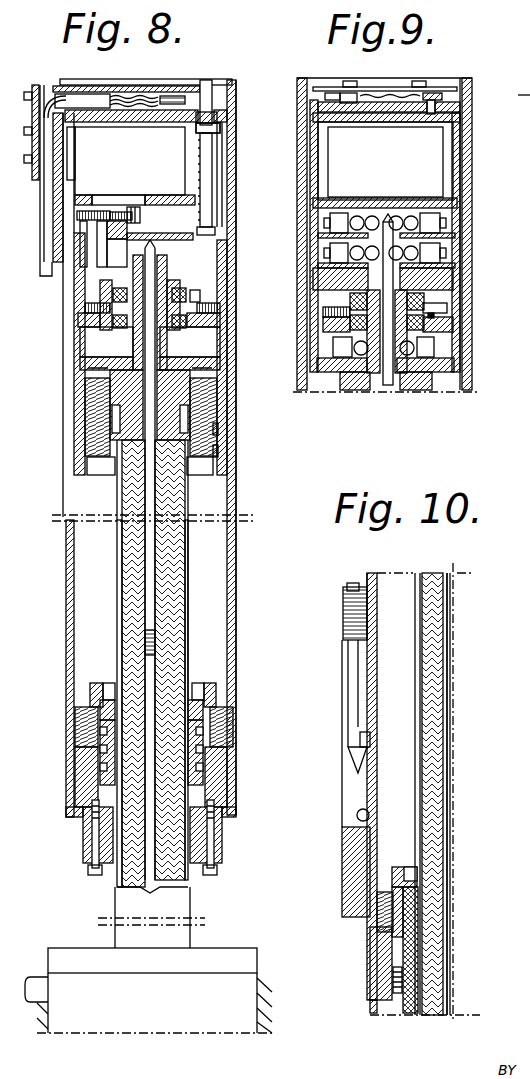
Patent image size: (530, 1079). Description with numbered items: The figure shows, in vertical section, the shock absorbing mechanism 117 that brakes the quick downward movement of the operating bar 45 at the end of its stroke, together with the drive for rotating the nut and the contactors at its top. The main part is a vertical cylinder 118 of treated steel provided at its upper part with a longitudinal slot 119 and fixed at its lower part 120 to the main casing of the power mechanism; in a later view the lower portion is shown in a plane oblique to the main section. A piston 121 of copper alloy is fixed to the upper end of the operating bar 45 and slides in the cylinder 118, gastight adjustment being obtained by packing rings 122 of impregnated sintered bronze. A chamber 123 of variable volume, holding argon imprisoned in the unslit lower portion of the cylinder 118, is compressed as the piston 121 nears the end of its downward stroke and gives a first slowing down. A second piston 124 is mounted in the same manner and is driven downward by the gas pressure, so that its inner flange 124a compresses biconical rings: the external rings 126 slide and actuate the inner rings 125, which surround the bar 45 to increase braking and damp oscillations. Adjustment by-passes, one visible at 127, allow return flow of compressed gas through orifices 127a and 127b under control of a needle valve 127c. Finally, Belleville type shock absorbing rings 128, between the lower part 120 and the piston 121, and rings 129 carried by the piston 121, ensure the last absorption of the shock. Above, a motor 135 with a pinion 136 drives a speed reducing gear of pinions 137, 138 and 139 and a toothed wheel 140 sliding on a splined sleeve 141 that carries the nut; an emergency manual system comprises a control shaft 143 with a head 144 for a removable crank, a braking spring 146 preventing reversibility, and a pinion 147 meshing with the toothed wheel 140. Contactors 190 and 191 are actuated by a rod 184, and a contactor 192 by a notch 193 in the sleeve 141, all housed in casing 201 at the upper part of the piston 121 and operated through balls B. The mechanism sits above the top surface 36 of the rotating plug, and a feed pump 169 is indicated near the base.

In FIG. 8, the top surface 36 is at (262, 976).
In FIG. 8, the operating bar 45 is at (190, 881).
In FIG. 10, the operating bar 45 is at (452, 788).
In FIG. 8, the shock absorbing mechanism 117 is at (241, 581).
In FIG. 8, the vertical cylinder 118 is at (237, 645).
In FIG. 9, the vertical cylinder 118 is at (472, 303).
In FIG. 10, the vertical cylinder 118 is at (367, 578).
In FIG. 8, the longitudinal slot 119 is at (68, 342).
In FIG. 8, the lower part of cylinder 120 is at (236, 753).
In FIG. 10, the lower part of cylinder 120 is at (403, 948).
In FIG. 8, the piston 121 is at (218, 395).
In FIG. 9, the piston 121 is at (456, 280).
In FIG. 8, the packing rings 122 is at (232, 453).
In FIG. 8, the chamber 123 is at (216, 662).
In FIG. 10, the chamber 123 is at (412, 841).
In FIG. 8, the second piston 124 is at (237, 778).
In FIG. 10, the second piston 124 is at (415, 952).
In FIG. 8, the inner flange 124a is at (207, 700).
In FIG. 10, the inner flange 124a is at (392, 887).
In FIG. 8, the inner rings 125 is at (218, 844).
In FIG. 10, the inner rings 125 is at (420, 935).
In FIG. 8, the external rings 126 is at (221, 828).
In FIG. 10, the external rings 126 is at (412, 912).
In FIG. 10, the adjustment by-pass 127 is at (352, 781).
In FIG. 10, the orifice 127a is at (369, 813).
In FIG. 10, the orifice 127b is at (371, 741).
In FIG. 10, the needle valve 127c is at (343, 629).
In FIG. 8, the shock absorbing rings 128 is at (222, 710).
In FIG. 10, the shock absorbing rings 128 is at (385, 915).
In FIG. 8, the shock absorbing rings 129 is at (208, 470).
In FIG. 8, the motor 135 is at (147, 171).
In FIG. 9, the motor 135 is at (400, 171).
In FIG. 8, the pinion 136 is at (141, 218).
In FIG. 8, the pinion 137 is at (118, 212).
In FIG. 8, the pinion 138 is at (93, 211).
In FIG. 8, the pinion 139 is at (85, 308).
In FIG. 8, the toothed wheel 140 is at (200, 297).
In FIG. 9, the toothed wheel 140 is at (418, 313).
In FIG. 8, the splined sleeve 141 is at (162, 337).
In FIG. 9, the splined sleeve 141 is at (378, 352).
In FIG. 10, the splined sleeve 141 is at (443, 740).
In FIG. 8, the control shaft 143 is at (208, 163).
In FIG. 8, the head 144 is at (207, 80).
In FIG. 8, the braking spring 146 is at (220, 139).
In FIG. 8, the pinion 147 is at (222, 307).
In FIG. 8, the feed pump 169 is at (40, 980).
In FIG. 8, the rod 184 is at (157, 254).
In FIG. 9, the rod 184 is at (390, 213).
In FIG. 10, the rod 184 is at (455, 657).
In FIG. 9, the contactor 190 is at (431, 222).
In FIG. 9, the contactor 191 is at (431, 255).
In FIG. 9, the contactor 192 is at (335, 344).
In FIG. 8, the notch 193 is at (138, 351).
In FIG. 9, the notch 193 is at (384, 355).
In FIG. 9, the casing 201 is at (456, 146).
In FIG. 9, the balls B is at (340, 248).